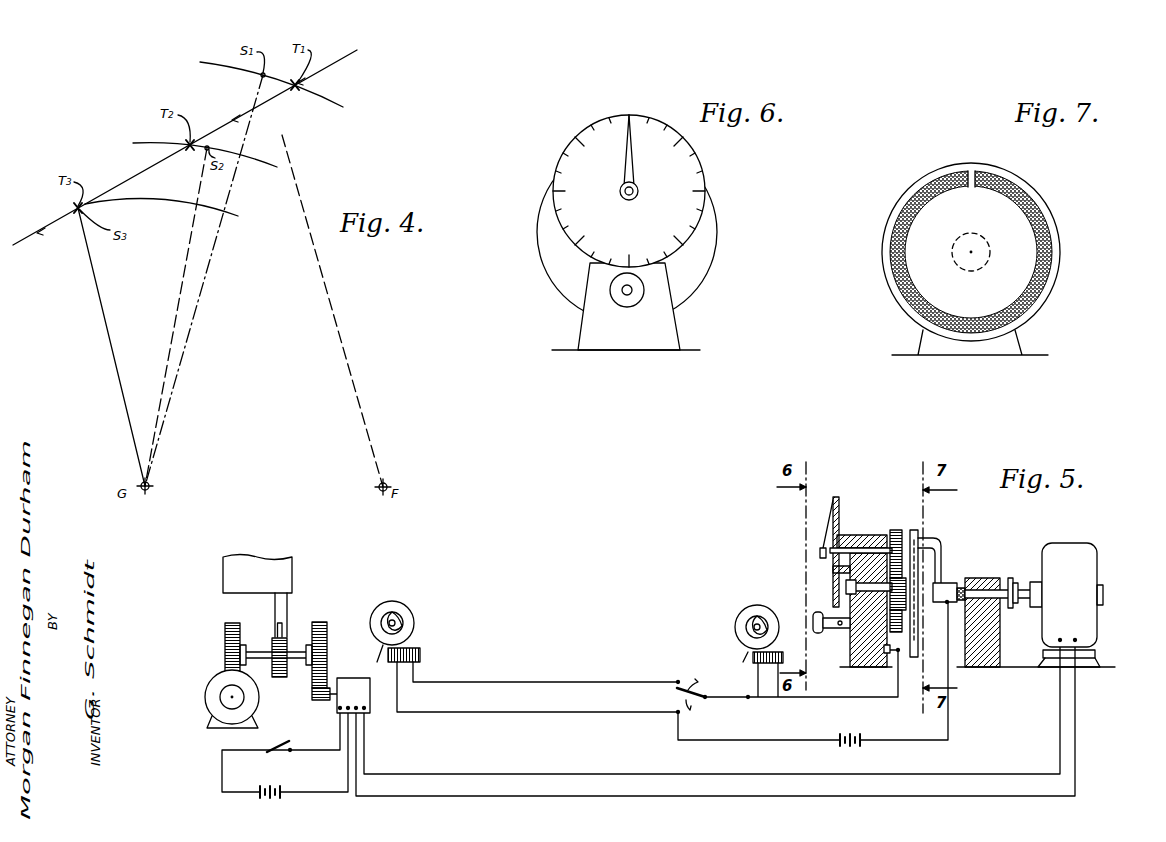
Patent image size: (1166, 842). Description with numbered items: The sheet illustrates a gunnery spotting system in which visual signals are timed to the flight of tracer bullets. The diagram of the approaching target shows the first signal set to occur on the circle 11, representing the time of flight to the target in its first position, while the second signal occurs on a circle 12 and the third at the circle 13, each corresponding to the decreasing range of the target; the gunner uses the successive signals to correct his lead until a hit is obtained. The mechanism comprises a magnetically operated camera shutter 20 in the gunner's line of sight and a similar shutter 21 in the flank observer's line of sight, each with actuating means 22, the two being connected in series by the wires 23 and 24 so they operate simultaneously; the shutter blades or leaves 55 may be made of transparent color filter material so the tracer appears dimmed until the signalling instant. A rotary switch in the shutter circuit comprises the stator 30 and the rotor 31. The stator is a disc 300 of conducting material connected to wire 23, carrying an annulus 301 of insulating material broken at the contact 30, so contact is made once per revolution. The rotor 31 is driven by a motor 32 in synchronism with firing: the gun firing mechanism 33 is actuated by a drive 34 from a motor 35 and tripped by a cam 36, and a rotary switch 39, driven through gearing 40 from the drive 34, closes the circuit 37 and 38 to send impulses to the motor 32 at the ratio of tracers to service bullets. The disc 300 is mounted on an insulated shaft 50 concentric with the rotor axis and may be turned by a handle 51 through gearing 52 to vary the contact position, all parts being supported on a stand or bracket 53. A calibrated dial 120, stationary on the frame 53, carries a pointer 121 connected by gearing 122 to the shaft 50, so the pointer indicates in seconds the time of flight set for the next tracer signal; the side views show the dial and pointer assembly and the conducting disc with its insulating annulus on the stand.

In FIG. 4, the circle 11 is at (332, 103).
In FIG. 4, the circle 12 is at (268, 167).
In FIG. 4, the circle 13 is at (148, 204).
In FIG. 5, the camera shutter 20 is at (400, 607).
In FIG. 5, the shutter 21 is at (750, 607).
In FIG. 5, the shutter actuating means 22 is at (420, 652).
In FIG. 5, the wire 23 is at (550, 682).
In FIG. 5, the wire 24 is at (573, 712).
In FIG. 7, the stator 30 is at (973, 173).
In FIG. 5, the rotor 31 is at (940, 555).
In FIG. 5, the motor 32 is at (1062, 552).
In FIG. 5, the firing mechanism 33 is at (287, 602).
In FIG. 5, the drive 34 is at (260, 653).
In FIG. 5, the motor 35 is at (217, 673).
In FIG. 5, the cam 36 is at (280, 677).
In FIG. 5, the electrical circuit 37 is at (333, 750).
In FIG. 5, the electrical circuit 38 is at (498, 796).
In FIG. 5, the rotary switch 39 is at (350, 678).
In FIG. 5, the gearing 40 is at (327, 637).
In FIG. 5, the insulated shaft 50 is at (860, 587).
In FIG. 6, the handle 51 is at (640, 300).
In FIG. 5, the handle 51 is at (817, 635).
In FIG. 5, the gearing 52 is at (905, 575).
In FIG. 6, the stand or bracket 53 is at (658, 338).
In FIG. 7, the stand or bracket 53 is at (1020, 343).
In FIG. 5, the stand or bracket 53 is at (860, 535).
In FIG. 5, the shutter blades or leaves 55 is at (400, 620).
In FIG. 6, the dial 120 is at (677, 177).
In FIG. 5, the dial 120 is at (842, 500).
In FIG. 6, the pointer 121 is at (625, 148).
In FIG. 5, the pointer 121 is at (828, 505).
In FIG. 5, the gearing 122 is at (896, 530).
In FIG. 6, the disc 300 is at (712, 278).
In FIG. 7, the disc 300 is at (1060, 235).
In FIG. 5, the disc 300 is at (915, 527).
In FIG. 7, the annulus 301 is at (1052, 262).
In FIG. 5, the annulus 301 is at (933, 535).